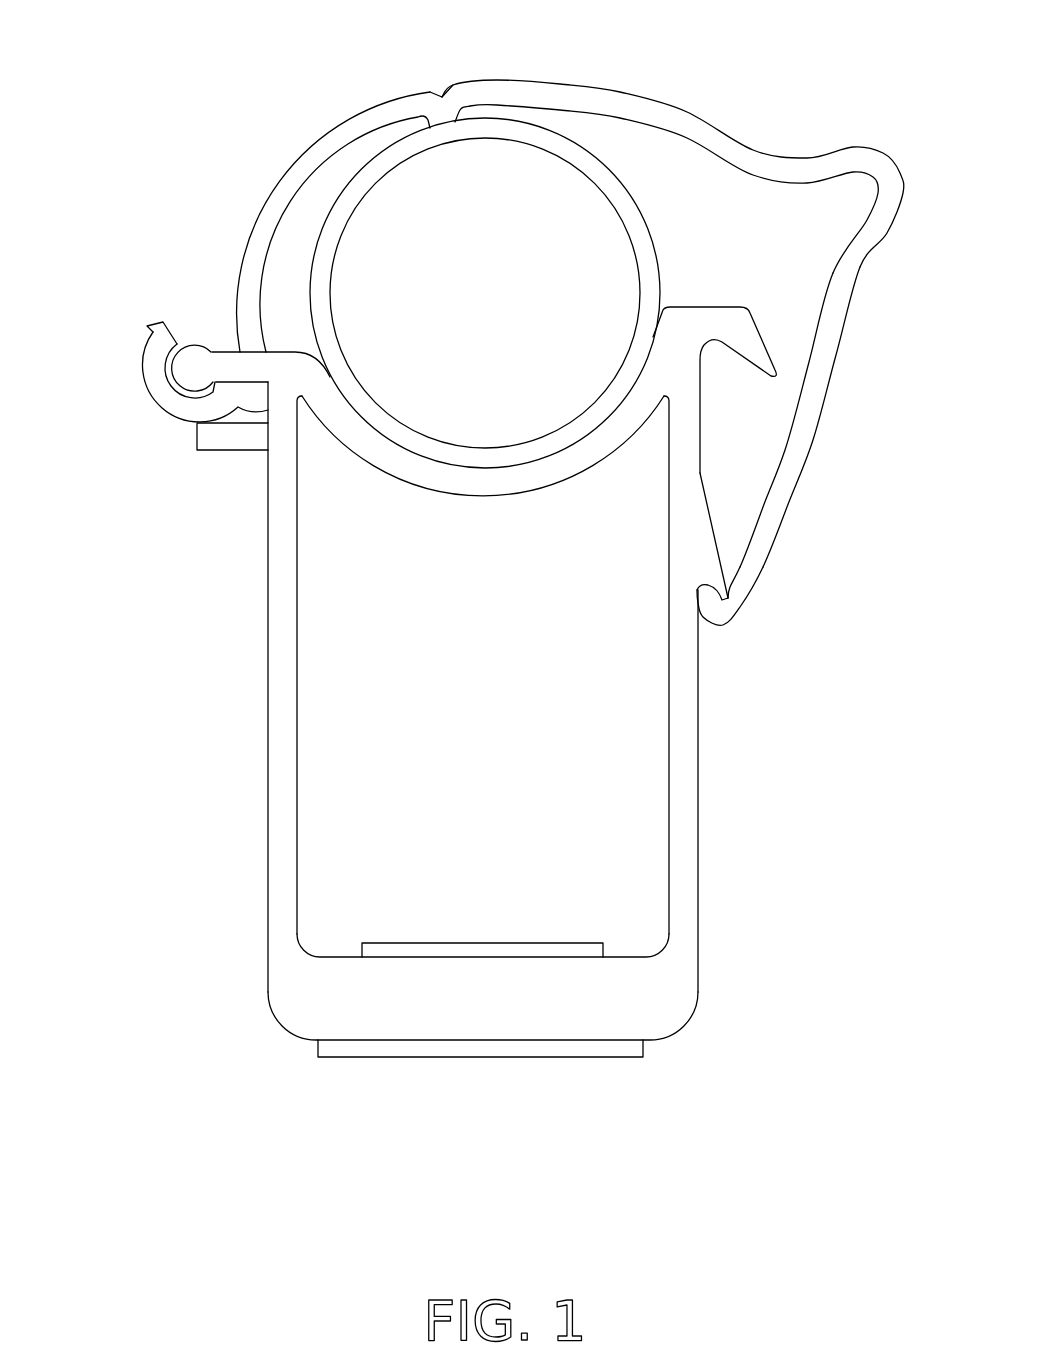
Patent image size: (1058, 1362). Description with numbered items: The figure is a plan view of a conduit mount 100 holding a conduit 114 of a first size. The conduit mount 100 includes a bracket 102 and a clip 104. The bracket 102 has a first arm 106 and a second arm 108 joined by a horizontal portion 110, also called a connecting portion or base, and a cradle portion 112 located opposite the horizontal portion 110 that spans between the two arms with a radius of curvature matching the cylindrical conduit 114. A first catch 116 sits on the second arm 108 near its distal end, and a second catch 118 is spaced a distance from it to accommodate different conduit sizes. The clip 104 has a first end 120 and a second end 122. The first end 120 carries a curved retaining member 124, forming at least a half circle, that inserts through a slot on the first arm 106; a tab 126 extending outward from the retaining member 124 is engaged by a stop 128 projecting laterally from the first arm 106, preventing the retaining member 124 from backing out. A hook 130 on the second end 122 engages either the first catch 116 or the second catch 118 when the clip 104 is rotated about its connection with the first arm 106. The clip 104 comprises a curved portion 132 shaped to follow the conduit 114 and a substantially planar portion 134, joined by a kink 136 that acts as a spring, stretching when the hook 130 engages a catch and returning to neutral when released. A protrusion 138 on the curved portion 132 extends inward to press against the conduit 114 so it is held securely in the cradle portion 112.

The conduit mount 100 is at (805, 82).
The bracket 102 is at (245, 680).
The clip 104 is at (268, 178).
The first arm 106 is at (277, 810).
The second arm 108 is at (686, 800).
The horizontal portion 110 is at (268, 1060).
The cradle portion 112 is at (476, 487).
The conduit 114 is at (630, 226).
The first catch 116 is at (750, 345).
The second catch 118 is at (710, 575).
The first end 120 is at (128, 362).
The second end 122 is at (740, 630).
The retaining member 124 is at (177, 402).
The tab 126 is at (147, 325).
The stop 128 is at (225, 437).
The hook 130 is at (700, 600).
The curved portion 132 is at (232, 57).
The planar portion 134 is at (835, 448).
The kink 136 is at (880, 157).
The protrusion 138 is at (440, 116).